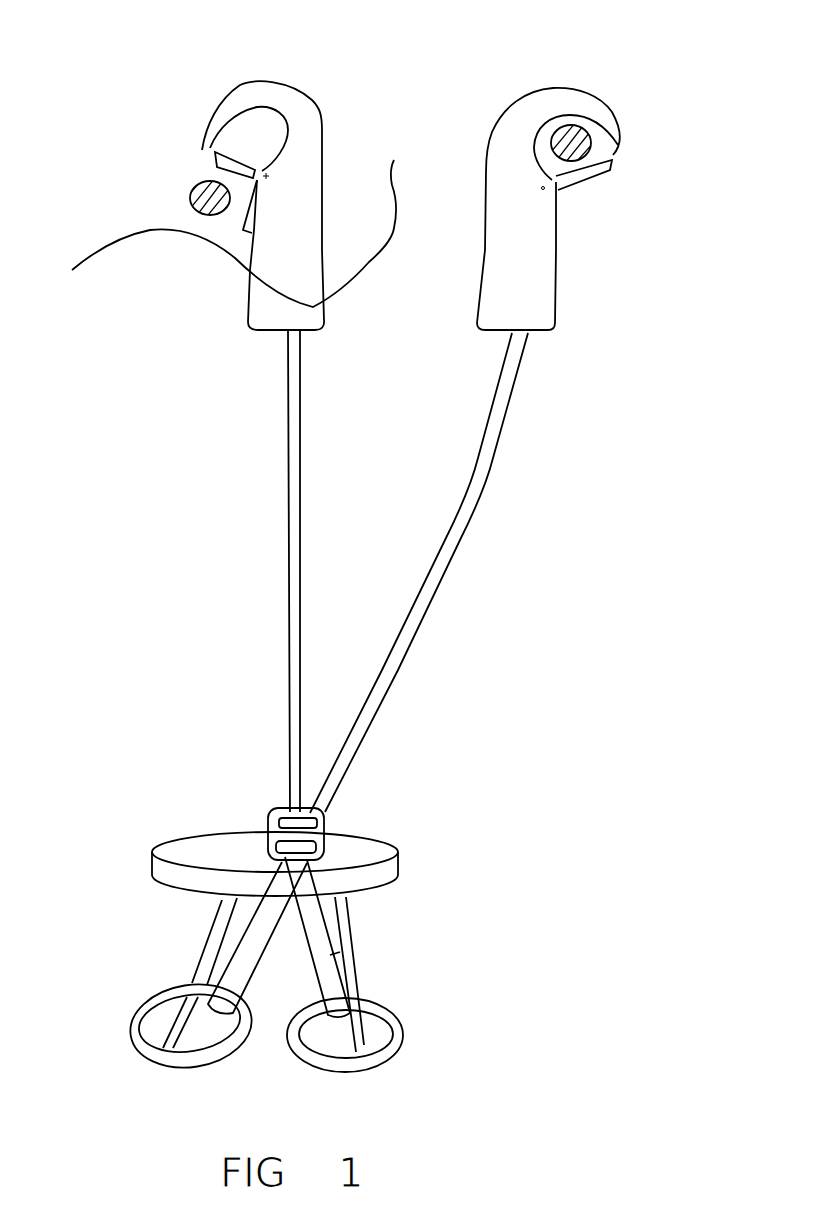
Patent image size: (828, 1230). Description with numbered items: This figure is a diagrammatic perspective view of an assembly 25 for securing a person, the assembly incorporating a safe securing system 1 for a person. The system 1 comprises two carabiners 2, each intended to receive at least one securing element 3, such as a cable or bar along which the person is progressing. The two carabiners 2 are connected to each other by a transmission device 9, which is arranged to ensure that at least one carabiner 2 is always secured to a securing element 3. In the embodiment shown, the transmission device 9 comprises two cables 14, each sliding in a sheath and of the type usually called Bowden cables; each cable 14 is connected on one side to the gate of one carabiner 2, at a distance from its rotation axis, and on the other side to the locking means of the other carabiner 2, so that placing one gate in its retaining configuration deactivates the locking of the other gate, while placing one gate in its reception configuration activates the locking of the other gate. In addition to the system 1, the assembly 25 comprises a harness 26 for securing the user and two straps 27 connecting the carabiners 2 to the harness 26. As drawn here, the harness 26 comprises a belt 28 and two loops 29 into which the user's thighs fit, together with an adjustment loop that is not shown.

The holding device 1 is at (378, 457).
The hook 2 is at (230, 83).
The rail / rod cross-section 3 is at (190, 197).
The strap 9 is at (454, 571).
The buckle 14 is at (303, 738).
The upper connecting means 25 is at (212, 399).
The lower holding means 26 is at (124, 887).
The strap 27 is at (326, 545).
The ring 28 is at (404, 868).
The loop 29 is at (240, 1071).